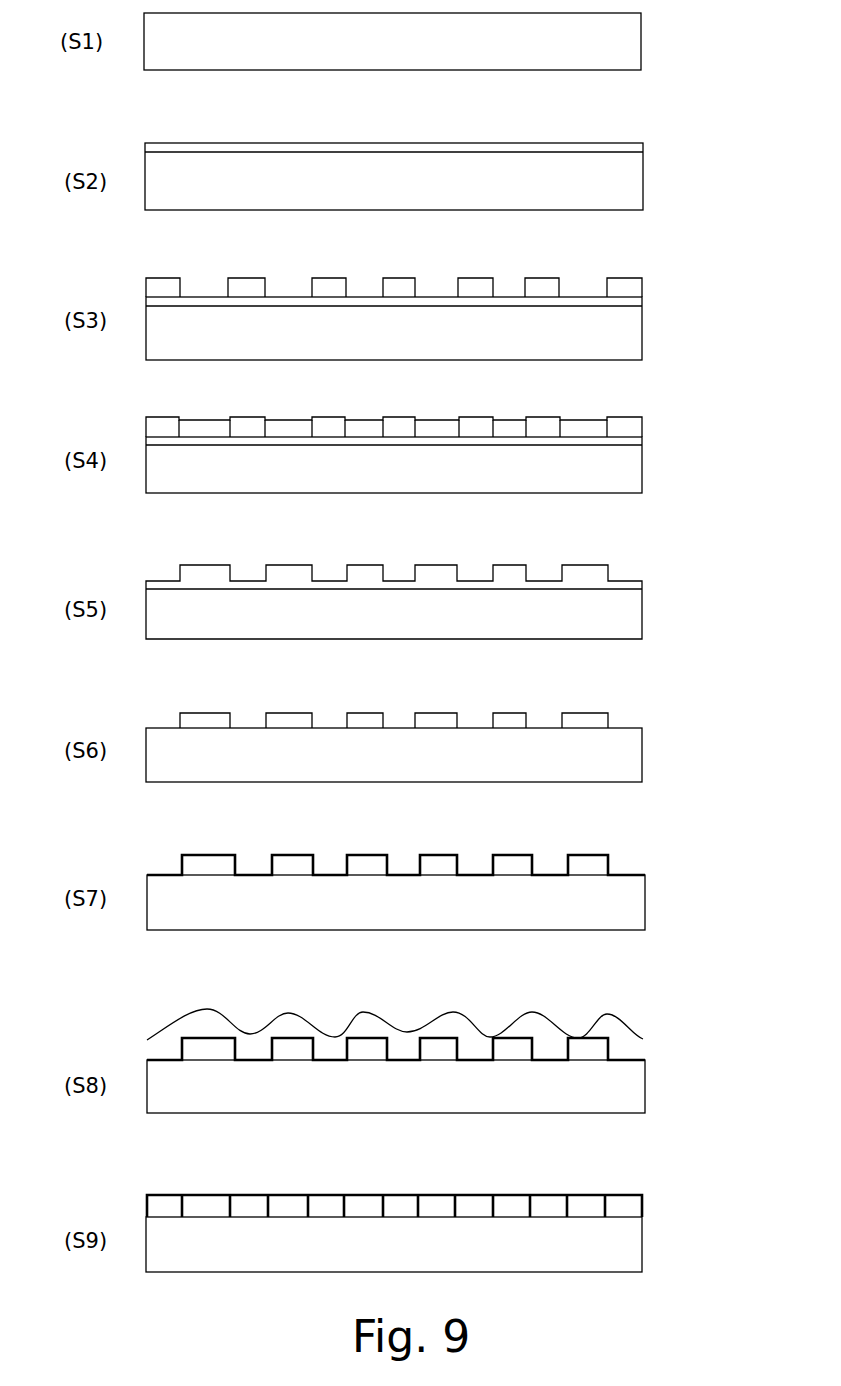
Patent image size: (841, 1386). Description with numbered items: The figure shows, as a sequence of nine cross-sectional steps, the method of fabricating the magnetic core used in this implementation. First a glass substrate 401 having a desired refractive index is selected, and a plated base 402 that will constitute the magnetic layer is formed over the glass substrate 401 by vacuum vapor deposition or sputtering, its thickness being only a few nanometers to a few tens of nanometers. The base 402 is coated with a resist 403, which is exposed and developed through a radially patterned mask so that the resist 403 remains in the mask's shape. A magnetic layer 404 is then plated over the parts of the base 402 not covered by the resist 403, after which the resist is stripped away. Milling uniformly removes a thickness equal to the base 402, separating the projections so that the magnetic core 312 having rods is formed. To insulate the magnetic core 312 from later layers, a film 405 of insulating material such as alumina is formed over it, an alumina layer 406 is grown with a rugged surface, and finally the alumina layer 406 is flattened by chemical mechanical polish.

The glass substrate 401 is at (628, 40).
The plated base 402 is at (640, 145).
The resist 403 is at (632, 287).
The magnetic layer 404 is at (585, 427).
The magnetic core 312 is at (590, 720).
The film of insulating material 405 is at (622, 872).
The alumina layer 406 is at (620, 1035).